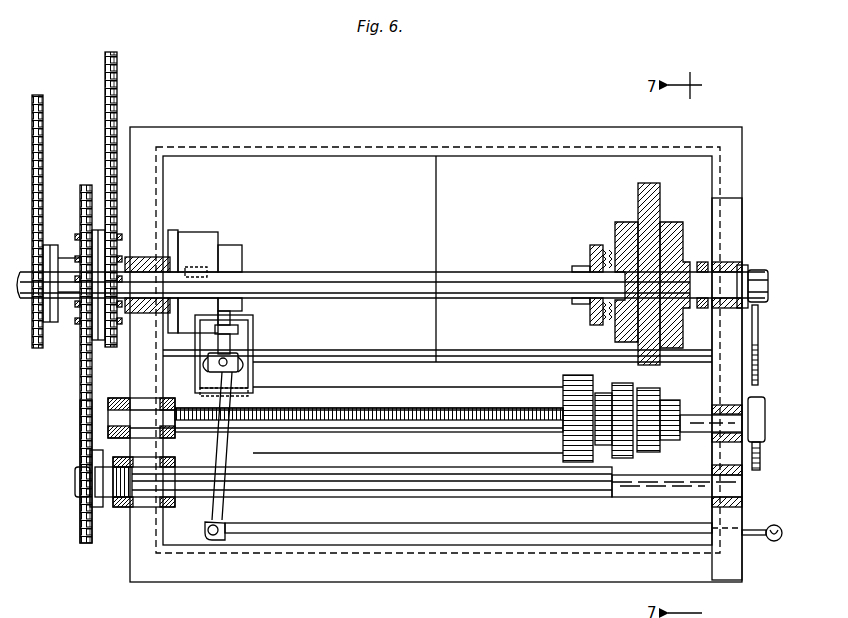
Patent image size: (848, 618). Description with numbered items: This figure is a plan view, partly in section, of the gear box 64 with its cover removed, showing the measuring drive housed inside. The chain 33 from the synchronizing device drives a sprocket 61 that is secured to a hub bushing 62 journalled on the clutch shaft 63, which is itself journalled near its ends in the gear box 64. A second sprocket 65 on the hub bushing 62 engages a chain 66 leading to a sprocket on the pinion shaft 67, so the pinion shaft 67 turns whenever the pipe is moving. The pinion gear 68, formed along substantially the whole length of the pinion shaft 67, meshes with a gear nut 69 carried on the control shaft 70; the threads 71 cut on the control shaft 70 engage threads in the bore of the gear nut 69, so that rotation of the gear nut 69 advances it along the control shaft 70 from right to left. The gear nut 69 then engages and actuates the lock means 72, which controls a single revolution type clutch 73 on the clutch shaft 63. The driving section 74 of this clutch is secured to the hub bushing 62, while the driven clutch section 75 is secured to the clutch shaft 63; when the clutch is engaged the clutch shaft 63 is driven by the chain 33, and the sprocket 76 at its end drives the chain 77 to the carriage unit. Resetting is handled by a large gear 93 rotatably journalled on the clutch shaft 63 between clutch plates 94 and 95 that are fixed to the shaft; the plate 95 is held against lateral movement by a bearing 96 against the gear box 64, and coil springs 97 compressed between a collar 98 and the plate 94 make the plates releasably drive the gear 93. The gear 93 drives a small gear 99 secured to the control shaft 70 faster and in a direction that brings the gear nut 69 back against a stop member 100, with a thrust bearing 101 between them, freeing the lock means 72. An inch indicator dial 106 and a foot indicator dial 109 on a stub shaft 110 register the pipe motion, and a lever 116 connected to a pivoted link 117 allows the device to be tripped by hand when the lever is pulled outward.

The chain 33 is at (117, 105).
The sprocket 61 is at (122, 256).
The hub bushing 62 is at (100, 340).
The clutch shaft 63 is at (360, 272).
The gear box 64 is at (298, 127).
The sprocket 65 is at (75, 330).
The chain 66 is at (80, 406).
The pinion shaft 67 is at (660, 498).
The pinion gear 68 is at (556, 498).
The gear nut 69 is at (565, 380).
The control shaft 70 is at (690, 414).
The threads 71 is at (360, 408).
The lock means 72 is at (272, 346).
The single revolution type clutch 73 is at (240, 243).
The driving section 74 is at (173, 230).
The driven clutch section 75 is at (200, 232).
The sprocket 76 is at (80, 230).
The chain 77 is at (43, 168).
The gear 93 is at (638, 196).
The clutch plate 94 is at (618, 230).
The clutch plate 95 is at (672, 228).
The bearing 96 is at (702, 262).
The coil springs 97 is at (596, 246).
The collar 98 is at (580, 266).
The gear 99 is at (655, 448).
The stop member 100 is at (612, 392).
The thrust bearing 101 is at (588, 384).
The inch indicator dial 106 is at (758, 388).
The foot indicator dial 109 is at (758, 318).
The stub shaft 110 is at (748, 340).
The lever 116 is at (748, 540).
The link 117 is at (226, 511).